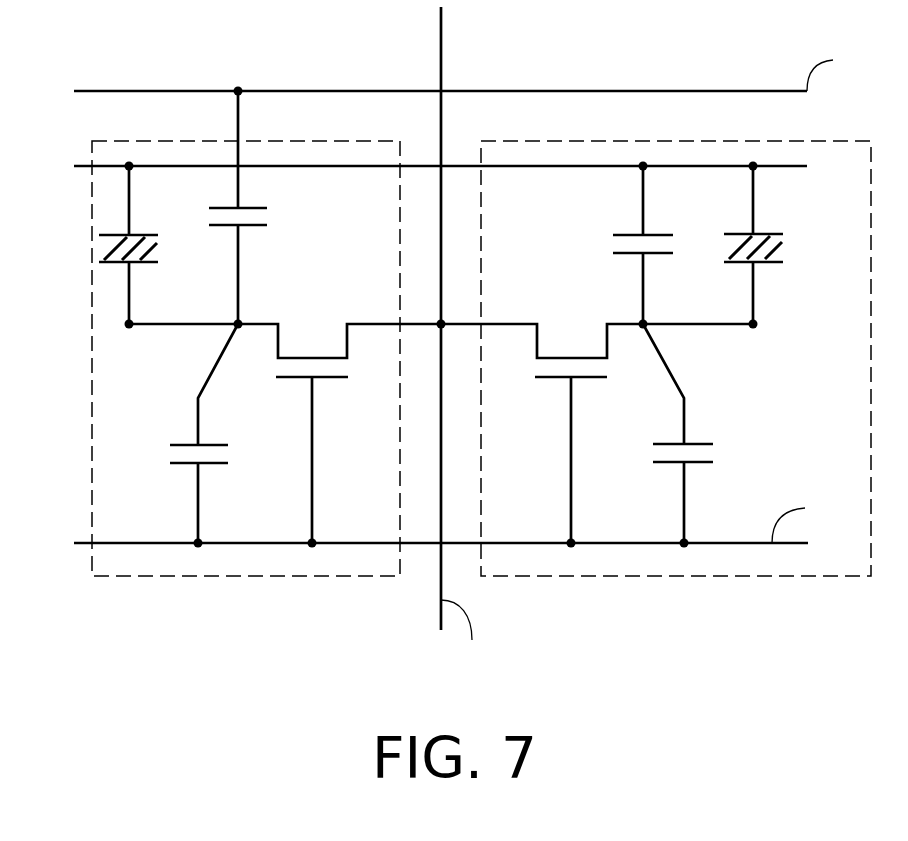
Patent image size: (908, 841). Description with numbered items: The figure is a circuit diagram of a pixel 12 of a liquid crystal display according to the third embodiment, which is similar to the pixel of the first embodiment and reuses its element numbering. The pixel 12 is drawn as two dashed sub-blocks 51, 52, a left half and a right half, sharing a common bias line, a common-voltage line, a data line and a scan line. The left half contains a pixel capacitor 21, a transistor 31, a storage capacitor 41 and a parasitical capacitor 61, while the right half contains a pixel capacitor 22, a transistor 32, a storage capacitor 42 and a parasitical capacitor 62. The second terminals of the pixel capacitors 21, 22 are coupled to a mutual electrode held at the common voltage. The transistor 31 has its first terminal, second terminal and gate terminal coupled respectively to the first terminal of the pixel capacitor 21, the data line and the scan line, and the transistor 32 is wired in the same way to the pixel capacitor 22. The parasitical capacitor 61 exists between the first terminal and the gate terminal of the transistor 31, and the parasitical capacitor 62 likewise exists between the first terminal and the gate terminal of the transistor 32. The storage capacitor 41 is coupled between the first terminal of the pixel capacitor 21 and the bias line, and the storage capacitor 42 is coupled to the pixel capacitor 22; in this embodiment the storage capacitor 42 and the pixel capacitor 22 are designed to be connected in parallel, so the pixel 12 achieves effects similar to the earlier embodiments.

The pixel 12 is at (878, 672).
The first pixel 51 is at (118, 140).
The second pixel 52 is at (537, 140).
The pixel capacitor 21 is at (168, 248).
The pixel capacitor 22 is at (790, 247).
The transistor 31 is at (312, 338).
The transistor 32 is at (571, 338).
The storage capacitor 41 is at (270, 216).
The storage capacitor 42 is at (628, 233).
The parasitical capacitor 61 is at (232, 454).
The parasitical capacitor 62 is at (715, 447).